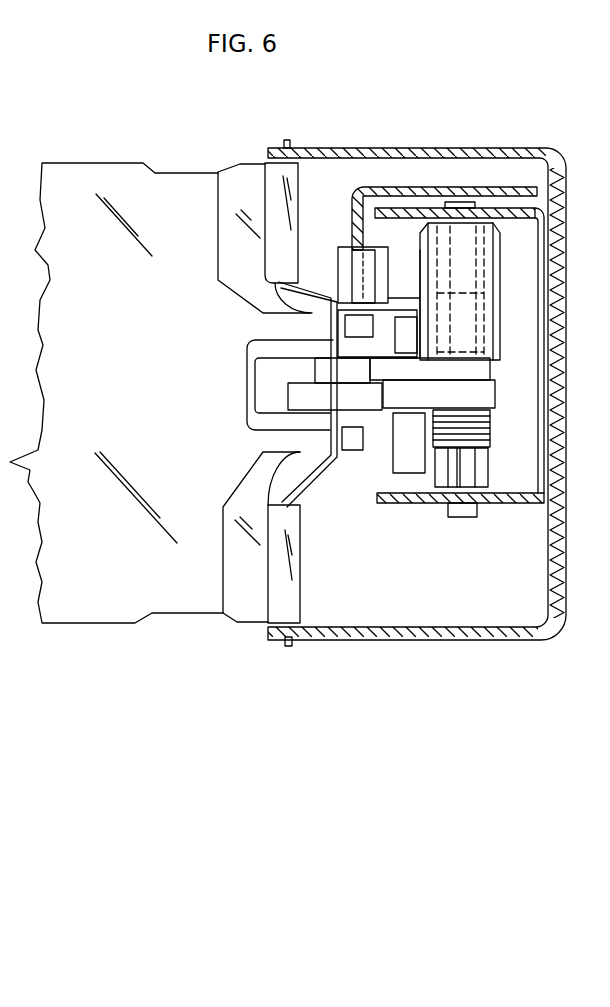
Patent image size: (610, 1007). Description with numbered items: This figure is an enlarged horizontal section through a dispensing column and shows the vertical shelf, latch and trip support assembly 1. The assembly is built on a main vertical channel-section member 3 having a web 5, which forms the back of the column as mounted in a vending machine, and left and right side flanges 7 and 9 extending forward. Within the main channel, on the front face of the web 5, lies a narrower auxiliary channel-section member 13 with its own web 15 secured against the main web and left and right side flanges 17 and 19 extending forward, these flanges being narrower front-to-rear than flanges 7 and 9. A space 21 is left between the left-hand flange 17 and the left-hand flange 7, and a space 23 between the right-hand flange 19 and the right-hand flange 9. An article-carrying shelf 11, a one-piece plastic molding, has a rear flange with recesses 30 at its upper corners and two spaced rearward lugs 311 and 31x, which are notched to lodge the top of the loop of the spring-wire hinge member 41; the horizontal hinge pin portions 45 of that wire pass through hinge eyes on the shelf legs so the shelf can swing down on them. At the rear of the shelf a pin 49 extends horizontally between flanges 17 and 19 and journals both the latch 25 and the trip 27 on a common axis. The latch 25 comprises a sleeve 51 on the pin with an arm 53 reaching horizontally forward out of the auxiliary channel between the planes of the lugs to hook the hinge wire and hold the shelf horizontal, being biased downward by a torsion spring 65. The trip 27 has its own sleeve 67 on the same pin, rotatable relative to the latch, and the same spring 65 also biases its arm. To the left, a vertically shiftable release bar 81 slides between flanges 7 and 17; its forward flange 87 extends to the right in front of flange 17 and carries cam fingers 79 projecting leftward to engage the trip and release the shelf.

The vertical shelf, latch and trip support assembly 1 is at (561, 625).
The main vertical channel-section member 3 is at (523, 148).
The web 5 is at (568, 460).
The left side flange 7 is at (392, 148).
The right side flange 9 is at (395, 638).
The article-carrying shelf 11 is at (70, 163).
The auxiliary channel-section member 13 is at (398, 504).
The web 15 is at (546, 462).
The left side flange 17 is at (511, 210).
The right side flange 19 is at (513, 503).
The space 21 is at (487, 170).
The space 23 is at (471, 605).
The latch 25 is at (490, 407).
The trip 27 is at (500, 293).
The recess 30 is at (228, 197).
The left lug 311 is at (317, 325).
The right lug 31x is at (353, 448).
The hinge member 41 is at (327, 478).
The hinge pin portion 45 is at (290, 648).
The pin 49 is at (457, 517).
The sleeve 51 is at (490, 490).
The arm 53 is at (402, 398).
The torsion spring 65 is at (437, 443).
The sleeve 67 is at (420, 266).
The cam finger 79 is at (352, 270).
The release bar 81 is at (442, 186).
The flange 87 is at (350, 213).